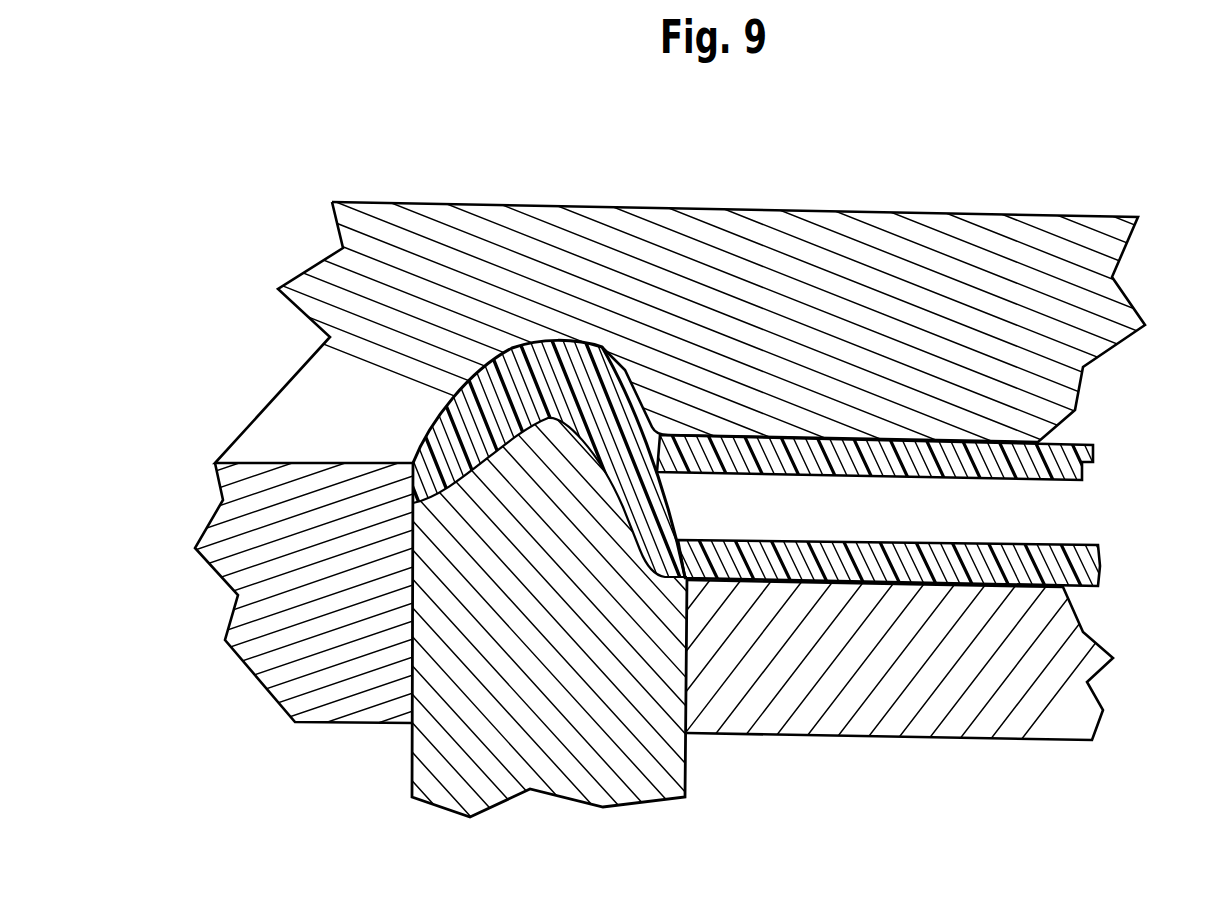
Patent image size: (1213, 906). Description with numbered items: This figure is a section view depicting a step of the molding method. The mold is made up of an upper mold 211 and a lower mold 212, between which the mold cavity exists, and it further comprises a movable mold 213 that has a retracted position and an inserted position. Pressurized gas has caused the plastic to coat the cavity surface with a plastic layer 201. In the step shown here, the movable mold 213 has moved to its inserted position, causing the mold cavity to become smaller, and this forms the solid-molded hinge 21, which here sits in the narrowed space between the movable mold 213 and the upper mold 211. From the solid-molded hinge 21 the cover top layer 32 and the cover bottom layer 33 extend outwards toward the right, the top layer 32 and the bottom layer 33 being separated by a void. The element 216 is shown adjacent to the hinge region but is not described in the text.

The solid-molded hinge 21 is at (600, 426).
The upper mold 211 is at (727, 208).
The lower mold 212 is at (277, 702).
The movable mold 213 is at (517, 797).
The seal 216 is at (530, 343).
The plastic layer 201 is at (921, 499).
The cover top layer 32 is at (1085, 472).
The cover bottom layer 33 is at (1102, 565).